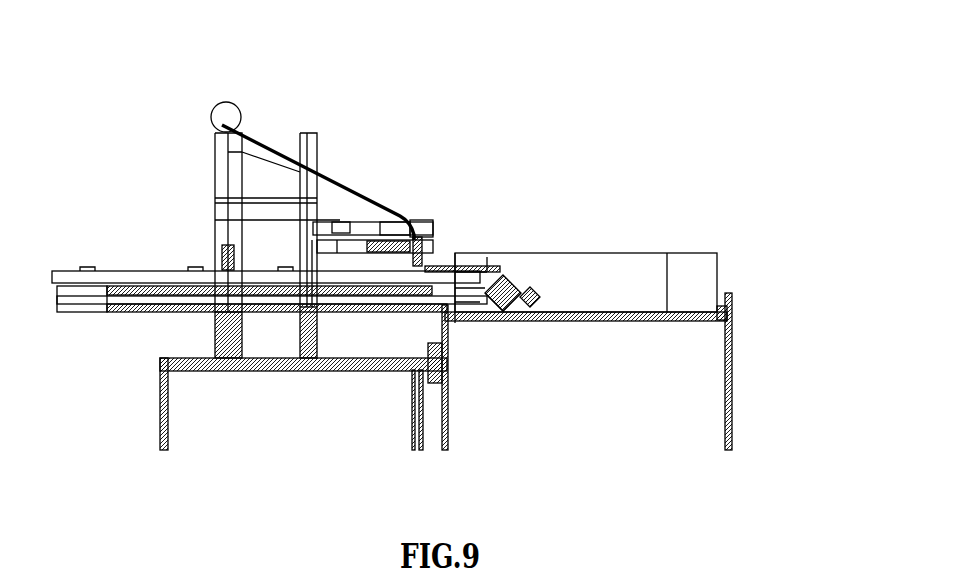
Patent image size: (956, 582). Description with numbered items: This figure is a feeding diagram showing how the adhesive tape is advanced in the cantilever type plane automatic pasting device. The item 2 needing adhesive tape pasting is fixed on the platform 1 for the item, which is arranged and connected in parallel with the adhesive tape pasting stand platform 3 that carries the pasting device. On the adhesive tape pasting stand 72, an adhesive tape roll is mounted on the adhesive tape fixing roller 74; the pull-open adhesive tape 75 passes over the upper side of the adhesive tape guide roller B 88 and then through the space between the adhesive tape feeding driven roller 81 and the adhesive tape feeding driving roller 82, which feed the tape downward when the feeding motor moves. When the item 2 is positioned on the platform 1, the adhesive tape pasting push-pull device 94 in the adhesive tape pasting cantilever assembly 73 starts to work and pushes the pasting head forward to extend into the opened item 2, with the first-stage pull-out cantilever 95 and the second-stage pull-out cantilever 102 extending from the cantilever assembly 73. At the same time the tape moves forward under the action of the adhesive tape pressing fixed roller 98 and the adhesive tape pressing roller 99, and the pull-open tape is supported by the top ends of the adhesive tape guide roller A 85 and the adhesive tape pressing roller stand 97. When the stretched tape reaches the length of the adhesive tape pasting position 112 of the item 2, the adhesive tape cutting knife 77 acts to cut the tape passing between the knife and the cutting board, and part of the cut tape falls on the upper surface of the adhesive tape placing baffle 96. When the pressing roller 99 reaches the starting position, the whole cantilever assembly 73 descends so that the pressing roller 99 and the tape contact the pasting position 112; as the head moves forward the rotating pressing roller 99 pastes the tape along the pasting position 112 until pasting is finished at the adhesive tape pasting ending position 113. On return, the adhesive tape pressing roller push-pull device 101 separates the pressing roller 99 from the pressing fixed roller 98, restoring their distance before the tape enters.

The platform for the item needing adhesive tape pasting 1 is at (727, 392).
The item needing adhesive tape pasting 2 is at (630, 282).
The adhesive tape pasting stand platform 3 is at (163, 413).
The adhesive tape pasting stand 72 is at (228, 186).
The adhesive tape pasting cantilever assembly 73 is at (185, 298).
The adhesive tape fixing roller 74 is at (222, 116).
The pull-open adhesive tape 75 is at (335, 176).
The adhesive tape cutting knife 77 is at (397, 225).
The adhesive tape feeding driven roller 81 is at (437, 216).
The adhesive tape feeding driving roller 82 is at (423, 227).
The adhesive tape guide roller A 85 is at (443, 273).
The adhesive tape guide roller B 88 is at (308, 170).
The adhesive tape pasting push-pull device 94 is at (383, 281).
The first-stage pull-out cantilever 95 is at (260, 292).
The adhesive tape placing baffle 96 is at (502, 275).
The adhesive tape pressing roller stand 97 is at (493, 281).
The adhesive tape pressing fixed roller 98 is at (530, 300).
The adhesive tape pressing roller 99 is at (500, 302).
The adhesive tape pressing roller push-pull device 101 is at (444, 340).
The second-stage pull-out cantilever 102 is at (377, 300).
The adhesive tape pasting position 112 is at (553, 315).
The adhesive tape pasting ending position 113 is at (667, 285).